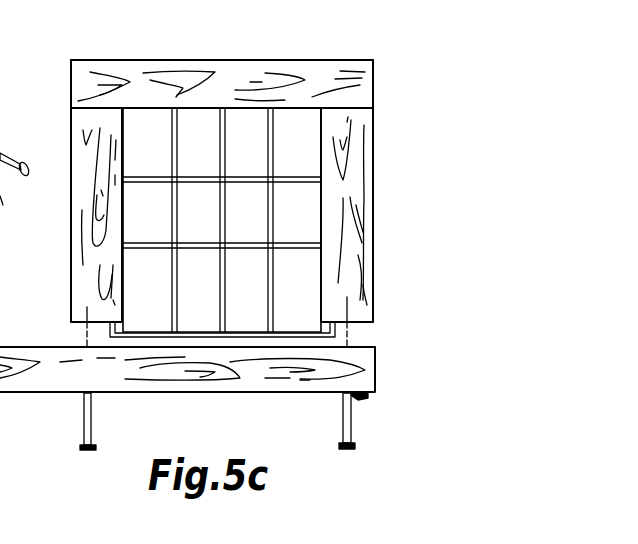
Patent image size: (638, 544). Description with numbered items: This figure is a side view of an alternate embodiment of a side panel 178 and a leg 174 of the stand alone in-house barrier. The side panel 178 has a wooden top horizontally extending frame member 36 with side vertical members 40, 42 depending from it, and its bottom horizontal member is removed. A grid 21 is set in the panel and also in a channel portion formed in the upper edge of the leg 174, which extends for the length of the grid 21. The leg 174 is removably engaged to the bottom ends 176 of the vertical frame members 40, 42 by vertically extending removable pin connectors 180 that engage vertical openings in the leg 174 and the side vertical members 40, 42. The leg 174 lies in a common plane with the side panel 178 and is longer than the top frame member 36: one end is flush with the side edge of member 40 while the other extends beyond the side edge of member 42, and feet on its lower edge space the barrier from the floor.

The grid 21 is at (152, 177).
The top horizontally extending frame member 36 is at (256, 58).
The outer vertically extending frame member 40 is at (377, 122).
The inner vertically extending frame member 42 is at (69, 228).
The leg 174 is at (196, 392).
The bottom ends 176 is at (80, 337).
The side panel 178 is at (146, 59).
The removable pin connectors 180 is at (80, 427).